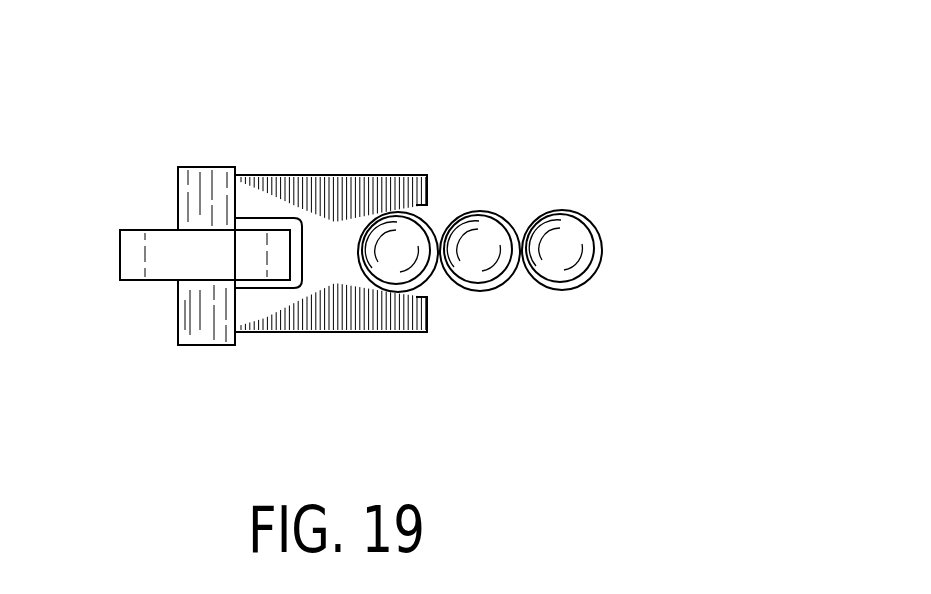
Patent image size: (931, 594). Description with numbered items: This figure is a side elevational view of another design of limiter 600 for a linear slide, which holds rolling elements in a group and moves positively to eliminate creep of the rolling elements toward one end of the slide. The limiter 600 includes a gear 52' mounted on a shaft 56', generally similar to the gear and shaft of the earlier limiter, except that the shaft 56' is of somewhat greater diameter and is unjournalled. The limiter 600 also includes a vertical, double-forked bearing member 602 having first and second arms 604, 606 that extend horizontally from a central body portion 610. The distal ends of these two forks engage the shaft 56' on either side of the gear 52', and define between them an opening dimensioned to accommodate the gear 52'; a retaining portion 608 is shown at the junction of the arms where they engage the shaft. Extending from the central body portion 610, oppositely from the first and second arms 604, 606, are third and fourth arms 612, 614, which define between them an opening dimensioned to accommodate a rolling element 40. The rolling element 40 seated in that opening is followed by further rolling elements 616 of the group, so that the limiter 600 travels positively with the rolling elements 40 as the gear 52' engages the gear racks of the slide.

The limiter 600 is at (577, 34).
The body 602 is at (340, 188).
The first arm 604 is at (267, 190).
The second arm 606 is at (262, 308).
The clip 608 is at (252, 214).
The central body portion 610 is at (330, 258).
The third arm 612 is at (415, 195).
The fourth arm 614 is at (415, 310).
The bead chain 616 is at (455, 200).
The rolling element 40 is at (410, 258).
The gear 52' is at (174, 297).
The shaft 56' is at (176, 297).